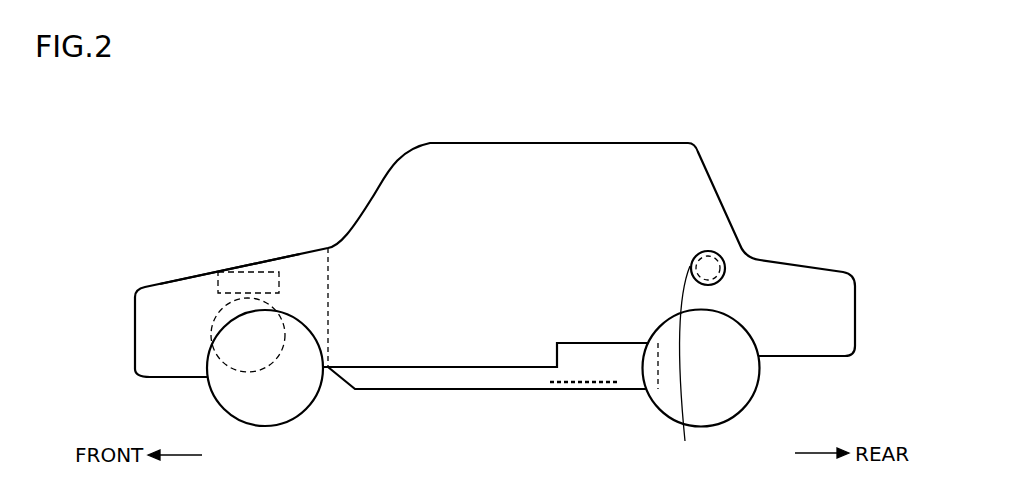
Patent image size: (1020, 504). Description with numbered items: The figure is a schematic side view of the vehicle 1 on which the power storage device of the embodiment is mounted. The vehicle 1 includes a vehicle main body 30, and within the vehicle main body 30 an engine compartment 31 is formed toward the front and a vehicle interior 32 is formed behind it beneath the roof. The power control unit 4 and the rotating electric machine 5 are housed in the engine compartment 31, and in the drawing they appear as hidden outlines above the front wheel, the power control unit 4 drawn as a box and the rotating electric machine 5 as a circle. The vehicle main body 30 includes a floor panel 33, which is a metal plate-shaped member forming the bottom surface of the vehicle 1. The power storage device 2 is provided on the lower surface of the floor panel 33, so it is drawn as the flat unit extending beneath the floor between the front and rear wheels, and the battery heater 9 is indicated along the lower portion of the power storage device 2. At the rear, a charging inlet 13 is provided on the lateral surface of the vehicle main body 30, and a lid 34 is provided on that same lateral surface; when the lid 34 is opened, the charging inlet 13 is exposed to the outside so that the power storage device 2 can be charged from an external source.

The vehicle 1 is at (758, 161).
The power storage device 2 is at (409, 390).
The power control unit 4 is at (277, 303).
The rotating electric machine 5 is at (233, 272).
The battery heater 9 is at (577, 385).
The charging inlet 13 is at (717, 286).
The vehicle main body 30 is at (522, 142).
The engine compartment 31 is at (185, 277).
The vehicle interior 32 is at (612, 173).
The floor panel 33 is at (460, 368).
The lid 34 is at (683, 364).